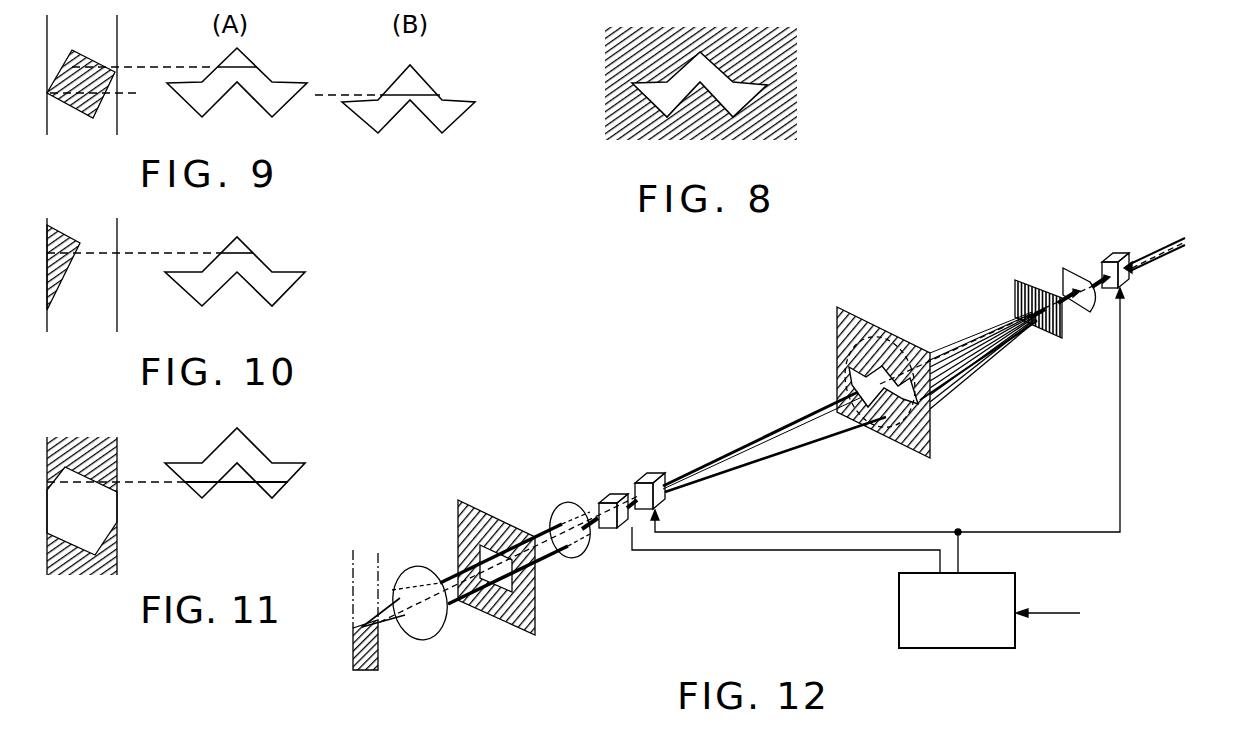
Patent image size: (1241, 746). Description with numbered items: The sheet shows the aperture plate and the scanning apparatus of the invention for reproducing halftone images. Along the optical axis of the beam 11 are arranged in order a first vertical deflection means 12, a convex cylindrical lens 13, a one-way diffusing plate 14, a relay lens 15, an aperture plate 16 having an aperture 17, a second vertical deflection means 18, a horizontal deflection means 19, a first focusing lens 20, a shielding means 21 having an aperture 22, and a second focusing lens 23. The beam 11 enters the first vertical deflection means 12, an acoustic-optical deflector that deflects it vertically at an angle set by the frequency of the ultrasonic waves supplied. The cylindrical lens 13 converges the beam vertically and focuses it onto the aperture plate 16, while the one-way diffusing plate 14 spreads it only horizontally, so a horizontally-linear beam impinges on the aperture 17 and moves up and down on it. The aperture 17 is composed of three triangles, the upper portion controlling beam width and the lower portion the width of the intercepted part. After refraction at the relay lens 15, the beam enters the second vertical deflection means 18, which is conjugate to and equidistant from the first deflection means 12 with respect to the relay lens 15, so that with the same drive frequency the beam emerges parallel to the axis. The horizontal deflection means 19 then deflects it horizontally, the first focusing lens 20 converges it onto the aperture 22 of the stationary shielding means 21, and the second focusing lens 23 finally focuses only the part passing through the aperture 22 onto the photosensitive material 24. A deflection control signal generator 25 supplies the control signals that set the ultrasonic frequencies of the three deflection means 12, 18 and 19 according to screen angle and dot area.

The beam 11 is at (1153, 247).
The first vertical deflection means 12 is at (1110, 254).
The convex cylindrical lens 13 is at (1066, 269).
The one-way diffusing plate 14 is at (1018, 282).
The relay lens 15 is at (893, 342).
The aperture plate 16 is at (862, 323).
The aperture 17 is at (858, 362).
The second vertical deflection means 18 is at (657, 480).
The horizontal deflection means 19 is at (608, 500).
The first focusing lens 20 is at (573, 557).
The shielding means 21 is at (535, 620).
The aperture 22 is at (512, 585).
The second focusing lens 23 is at (437, 637).
The photosensitive material 24 is at (379, 668).
The deflection control signal generator 25 is at (937, 622).